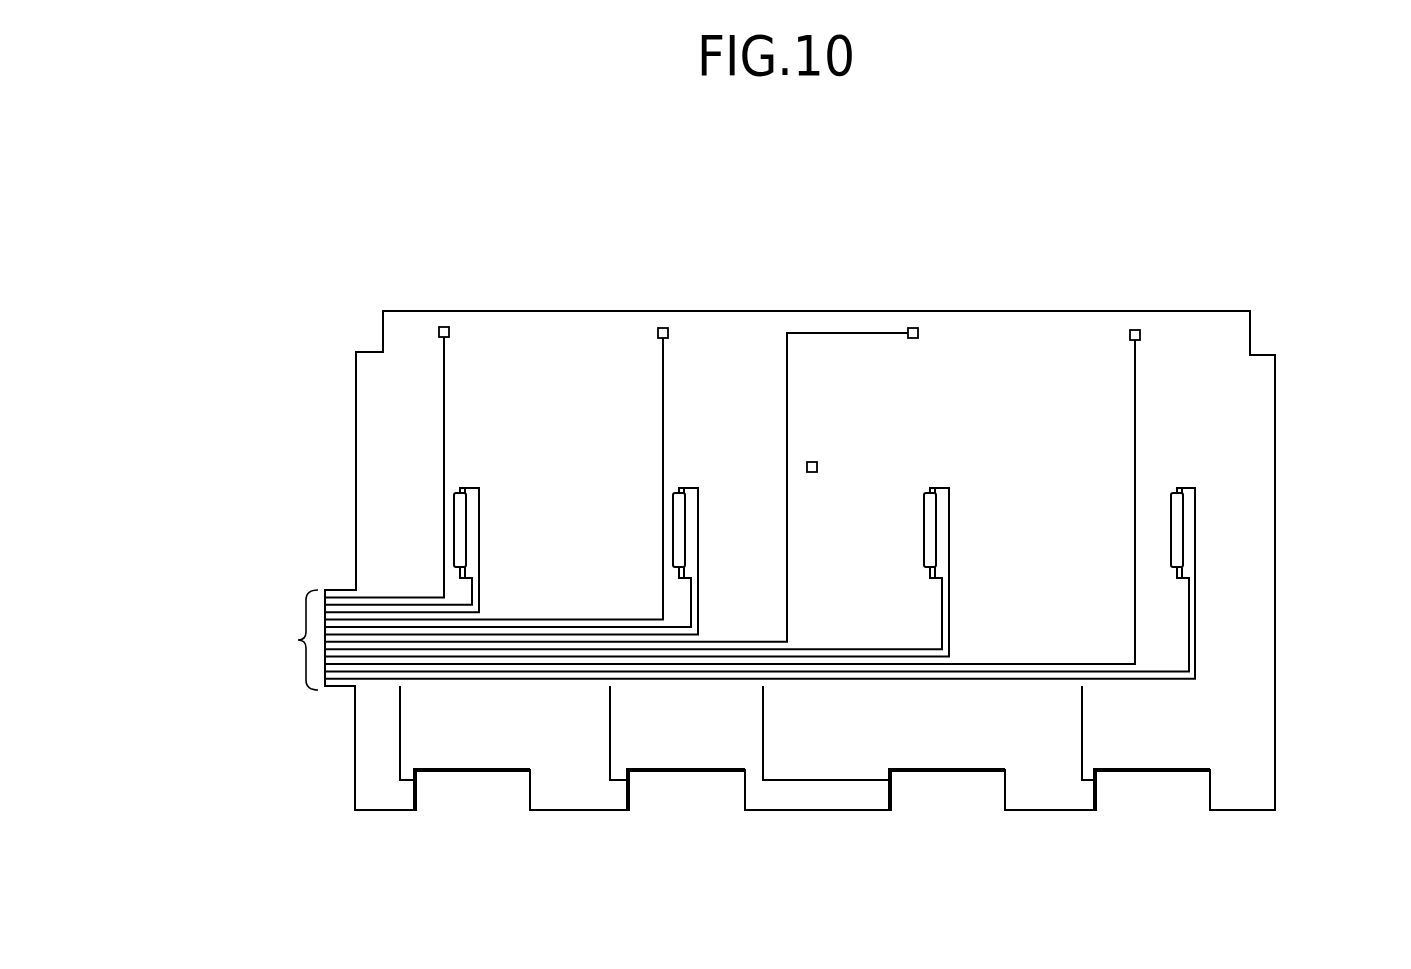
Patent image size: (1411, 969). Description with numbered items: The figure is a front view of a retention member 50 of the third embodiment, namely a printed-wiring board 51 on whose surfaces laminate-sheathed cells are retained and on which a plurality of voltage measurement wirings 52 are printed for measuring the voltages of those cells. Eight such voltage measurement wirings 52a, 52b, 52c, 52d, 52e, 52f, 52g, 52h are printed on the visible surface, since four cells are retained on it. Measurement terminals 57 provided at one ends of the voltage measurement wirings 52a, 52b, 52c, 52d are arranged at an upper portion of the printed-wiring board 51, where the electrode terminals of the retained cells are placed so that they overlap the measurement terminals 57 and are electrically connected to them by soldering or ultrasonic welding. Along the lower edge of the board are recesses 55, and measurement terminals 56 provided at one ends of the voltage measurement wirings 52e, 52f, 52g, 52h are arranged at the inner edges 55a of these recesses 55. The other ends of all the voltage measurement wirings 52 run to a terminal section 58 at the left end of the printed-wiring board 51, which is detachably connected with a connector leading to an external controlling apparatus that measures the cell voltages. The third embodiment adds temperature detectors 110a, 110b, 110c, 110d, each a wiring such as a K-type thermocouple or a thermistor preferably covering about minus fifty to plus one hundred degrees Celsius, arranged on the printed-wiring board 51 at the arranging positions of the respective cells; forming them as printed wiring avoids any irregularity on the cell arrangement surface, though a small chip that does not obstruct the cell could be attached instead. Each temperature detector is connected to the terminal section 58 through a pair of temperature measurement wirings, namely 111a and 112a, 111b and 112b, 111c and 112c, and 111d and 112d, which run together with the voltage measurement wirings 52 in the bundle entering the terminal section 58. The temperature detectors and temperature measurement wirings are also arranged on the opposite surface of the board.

The flexible wiring board 50 is at (1075, 213).
The printed-wiring board 51 is at (1022, 323).
The voltage measurement wirings 52 is at (211, 640).
The voltage measurement wiring 52a is at (445, 386).
The voltage measurement wiring 52b is at (664, 386).
The voltage measurement wiring 52c is at (788, 386).
The voltage measurement wiring 52d is at (1136, 386).
The voltage measurement wiring 52e is at (401, 718).
The voltage measurement wiring 52f is at (611, 718).
The voltage measurement wiring 52g is at (764, 718).
The voltage measurement wiring 52h is at (1083, 718).
The recess 55 is at (486, 772).
The inner edge 55a is at (530, 806).
The measurement terminal 56 is at (416, 802).
The measurement terminal 57 is at (445, 326).
The terminal section 58 is at (343, 700).
The temperature detector 110a is at (461, 489).
The temperature detector 110b is at (681, 489).
The temperature detector 110c is at (931, 489).
The temperature detector 110d is at (1179, 489).
The temperature measurement wiring 111a is at (473, 592).
The temperature measurement wiring 111b is at (692, 602).
The temperature measurement wiring 111c is at (943, 607).
The temperature measurement wiring 111d is at (1190, 612).
The temperature measurement wiring 112a is at (480, 528).
The temperature measurement wiring 112b is at (699, 527).
The temperature measurement wiring 112c is at (950, 528).
The temperature measurement wiring 112d is at (1196, 530).